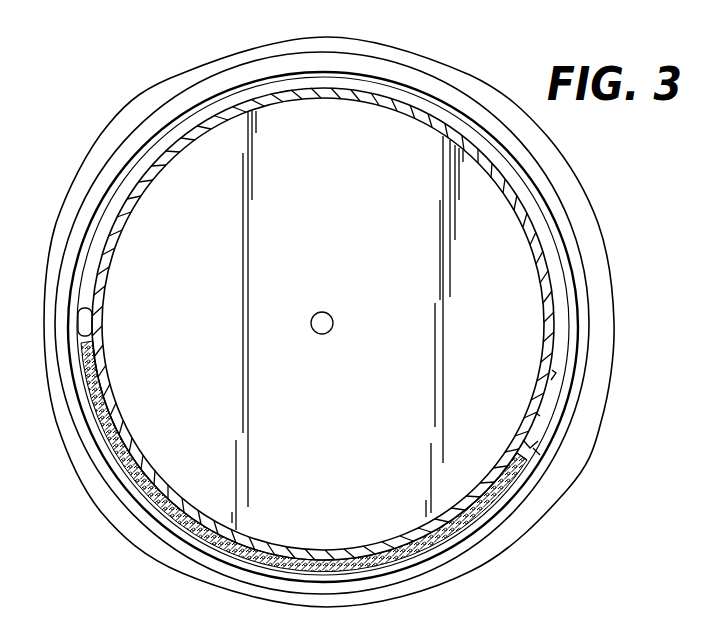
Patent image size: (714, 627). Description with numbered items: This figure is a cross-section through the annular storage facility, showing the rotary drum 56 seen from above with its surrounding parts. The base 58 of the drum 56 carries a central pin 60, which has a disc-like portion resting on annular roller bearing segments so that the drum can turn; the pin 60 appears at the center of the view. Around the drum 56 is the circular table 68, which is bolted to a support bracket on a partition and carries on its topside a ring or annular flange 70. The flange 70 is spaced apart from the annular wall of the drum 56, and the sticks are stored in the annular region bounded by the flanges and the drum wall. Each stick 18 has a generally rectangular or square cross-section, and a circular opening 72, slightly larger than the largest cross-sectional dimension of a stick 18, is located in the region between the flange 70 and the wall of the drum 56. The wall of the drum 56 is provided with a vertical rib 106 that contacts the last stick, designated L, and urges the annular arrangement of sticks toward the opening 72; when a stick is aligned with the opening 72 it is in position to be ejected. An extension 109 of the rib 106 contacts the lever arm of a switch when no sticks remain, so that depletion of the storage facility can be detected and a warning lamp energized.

The annular flange 70 is at (98, 197).
The circular table 68 is at (585, 338).
The rotary drum 56 is at (118, 225).
The base 58 is at (340, 182).
The pin 60 is at (328, 316).
The circular opening 72 is at (93, 313).
The stick 18 is at (83, 350).
The vertical rib 106 is at (530, 442).
The extension 109 is at (533, 455).
The last stick L is at (536, 450).